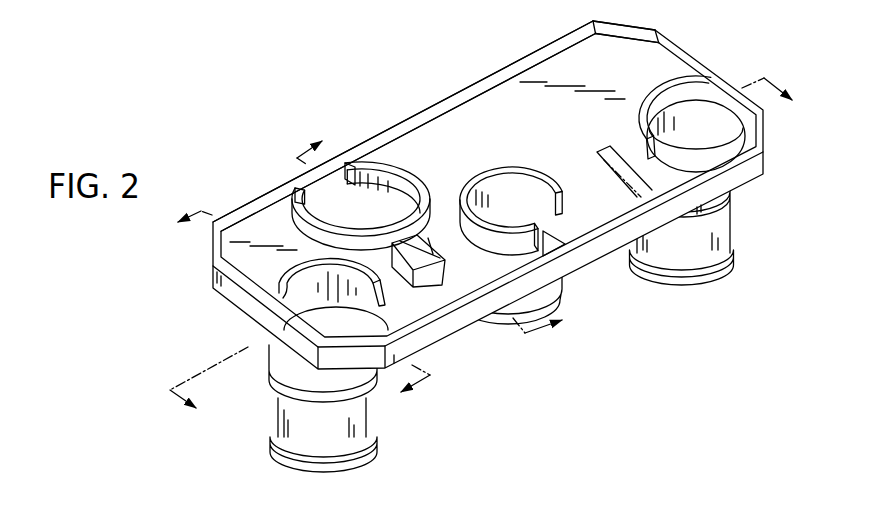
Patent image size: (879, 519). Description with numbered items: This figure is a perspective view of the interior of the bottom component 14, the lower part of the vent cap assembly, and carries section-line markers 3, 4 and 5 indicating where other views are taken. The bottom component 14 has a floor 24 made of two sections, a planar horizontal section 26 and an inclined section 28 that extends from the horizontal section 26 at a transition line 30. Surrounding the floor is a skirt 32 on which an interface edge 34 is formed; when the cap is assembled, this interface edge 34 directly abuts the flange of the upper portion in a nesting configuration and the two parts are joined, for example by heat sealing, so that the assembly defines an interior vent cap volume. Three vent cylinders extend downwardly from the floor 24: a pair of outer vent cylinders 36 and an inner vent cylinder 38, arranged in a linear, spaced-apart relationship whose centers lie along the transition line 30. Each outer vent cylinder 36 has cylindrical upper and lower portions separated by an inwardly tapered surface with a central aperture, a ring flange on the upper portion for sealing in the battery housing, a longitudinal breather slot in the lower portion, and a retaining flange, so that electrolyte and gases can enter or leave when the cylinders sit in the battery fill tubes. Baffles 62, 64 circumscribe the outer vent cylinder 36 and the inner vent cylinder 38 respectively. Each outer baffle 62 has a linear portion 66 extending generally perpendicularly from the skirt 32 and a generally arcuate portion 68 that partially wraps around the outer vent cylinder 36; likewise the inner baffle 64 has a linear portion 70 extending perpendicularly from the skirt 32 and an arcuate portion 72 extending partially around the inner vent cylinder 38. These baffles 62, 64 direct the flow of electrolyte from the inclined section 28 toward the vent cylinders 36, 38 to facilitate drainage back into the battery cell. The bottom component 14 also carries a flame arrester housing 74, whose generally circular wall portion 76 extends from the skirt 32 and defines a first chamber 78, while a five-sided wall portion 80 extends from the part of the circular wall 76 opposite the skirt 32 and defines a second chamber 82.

The bottom component 14 is at (620, 303).
The floor 24 is at (634, 64).
The horizontal section 26 is at (589, 212).
The inclined section 28 is at (519, 122).
The transition line 30 is at (597, 152).
The skirt 32 is at (613, 33).
The interface edge 34 is at (423, 113).
The outer vent cylinder 36 is at (287, 418).
The inner vent cylinder 38 is at (548, 296).
The outer baffle 62 is at (687, 89).
The inner baffle 64 is at (481, 178).
The linear portion 66 is at (679, 68).
The arcuate portion 68 is at (646, 124).
The linear portion 70 is at (580, 250).
The arcuate portion 72 is at (505, 250).
The flame arrester housing 74 is at (283, 178).
The circular wall portion 76 is at (388, 165).
The first chamber 78 is at (361, 206).
The five-sided wall portion 80 is at (447, 256).
The second chamber 82 is at (418, 250).
The section line 3- 3 is at (471, 237).
The section line 4- 4 is at (311, 297).
The section line 5- 5 is at (424, 245).